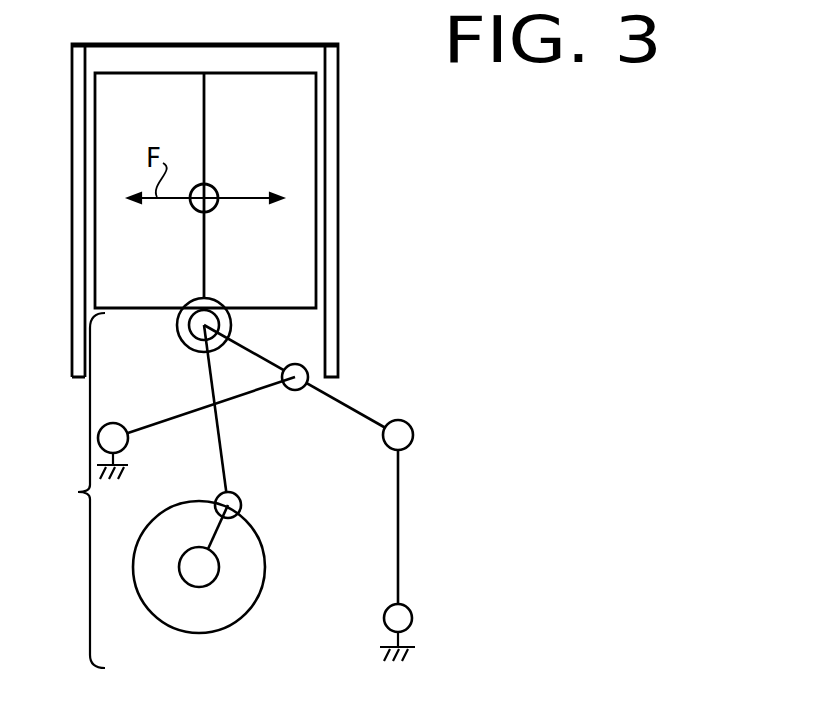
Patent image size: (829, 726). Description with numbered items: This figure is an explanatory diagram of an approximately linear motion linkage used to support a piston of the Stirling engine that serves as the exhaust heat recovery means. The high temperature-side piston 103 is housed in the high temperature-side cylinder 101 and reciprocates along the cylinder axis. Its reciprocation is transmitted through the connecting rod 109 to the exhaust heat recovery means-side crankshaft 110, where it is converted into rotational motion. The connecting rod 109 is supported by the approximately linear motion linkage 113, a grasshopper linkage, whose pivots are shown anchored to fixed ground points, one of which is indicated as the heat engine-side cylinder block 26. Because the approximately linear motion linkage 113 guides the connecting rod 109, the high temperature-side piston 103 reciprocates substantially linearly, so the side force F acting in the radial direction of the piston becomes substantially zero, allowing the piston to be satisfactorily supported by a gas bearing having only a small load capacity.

The high temperature-side cylinder 101 is at (333, 355).
The high temperature-side piston 103 is at (315, 162).
The connecting rod 109 is at (223, 453).
The exhaust heat recovery means-side crankshaft 110 is at (198, 579).
The approximately linear motion linkage 113 is at (221, 483).
The heat engine-side cylinder block 26 is at (412, 650).